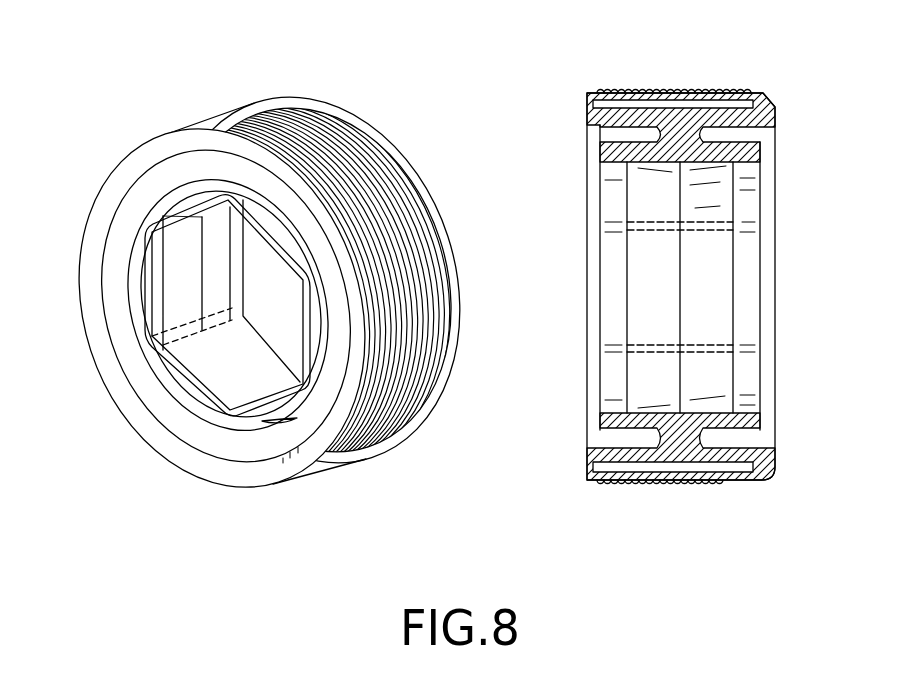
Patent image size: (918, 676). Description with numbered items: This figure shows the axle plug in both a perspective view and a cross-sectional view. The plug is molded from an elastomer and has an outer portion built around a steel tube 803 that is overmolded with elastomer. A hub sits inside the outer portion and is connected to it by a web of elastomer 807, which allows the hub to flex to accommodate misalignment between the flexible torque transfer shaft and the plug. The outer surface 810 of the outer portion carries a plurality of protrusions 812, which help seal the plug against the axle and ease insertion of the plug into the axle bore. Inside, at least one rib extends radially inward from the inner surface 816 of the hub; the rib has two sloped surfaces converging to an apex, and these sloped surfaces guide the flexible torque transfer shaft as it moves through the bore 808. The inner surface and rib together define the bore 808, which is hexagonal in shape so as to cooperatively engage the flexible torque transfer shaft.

The steel tube 803 is at (731, 468).
The web of elastomer 807 is at (700, 445).
The bore 808 is at (267, 317).
The outer surface 810 is at (760, 92).
The protrusions 812 is at (659, 92).
The inner surface 816 is at (748, 333).